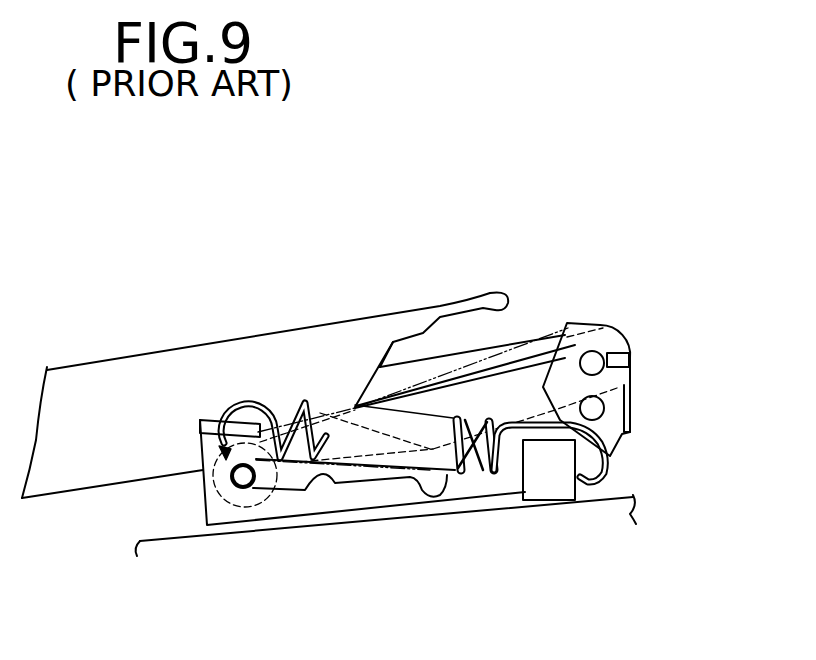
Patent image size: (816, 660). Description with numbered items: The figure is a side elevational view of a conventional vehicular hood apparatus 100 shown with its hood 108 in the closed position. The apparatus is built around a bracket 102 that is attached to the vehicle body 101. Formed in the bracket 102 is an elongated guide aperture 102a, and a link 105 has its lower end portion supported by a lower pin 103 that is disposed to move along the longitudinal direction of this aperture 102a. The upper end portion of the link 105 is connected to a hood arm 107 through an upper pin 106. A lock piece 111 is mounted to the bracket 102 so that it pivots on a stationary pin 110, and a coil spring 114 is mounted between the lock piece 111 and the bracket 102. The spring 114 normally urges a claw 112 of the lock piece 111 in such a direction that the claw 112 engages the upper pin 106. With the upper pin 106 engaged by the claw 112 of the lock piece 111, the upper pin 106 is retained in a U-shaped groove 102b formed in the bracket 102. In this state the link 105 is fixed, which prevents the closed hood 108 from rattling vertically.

The vehicular hood apparatus 100 is at (556, 296).
The vehicle body 101 is at (326, 570).
The bracket 102 is at (353, 488).
The elongated guide aperture 102a is at (415, 503).
The U-shaped groove 102b is at (690, 323).
The lower pin 103 is at (257, 554).
The link 105 is at (363, 336).
The upper pin 106 is at (630, 344).
The hood arm 107 is at (465, 295).
The hood 108 is at (256, 362).
The stationary pin 110 is at (698, 382).
The lock piece 111 is at (684, 397).
The claw 112 is at (615, 287).
The coil spring 114 is at (531, 510).